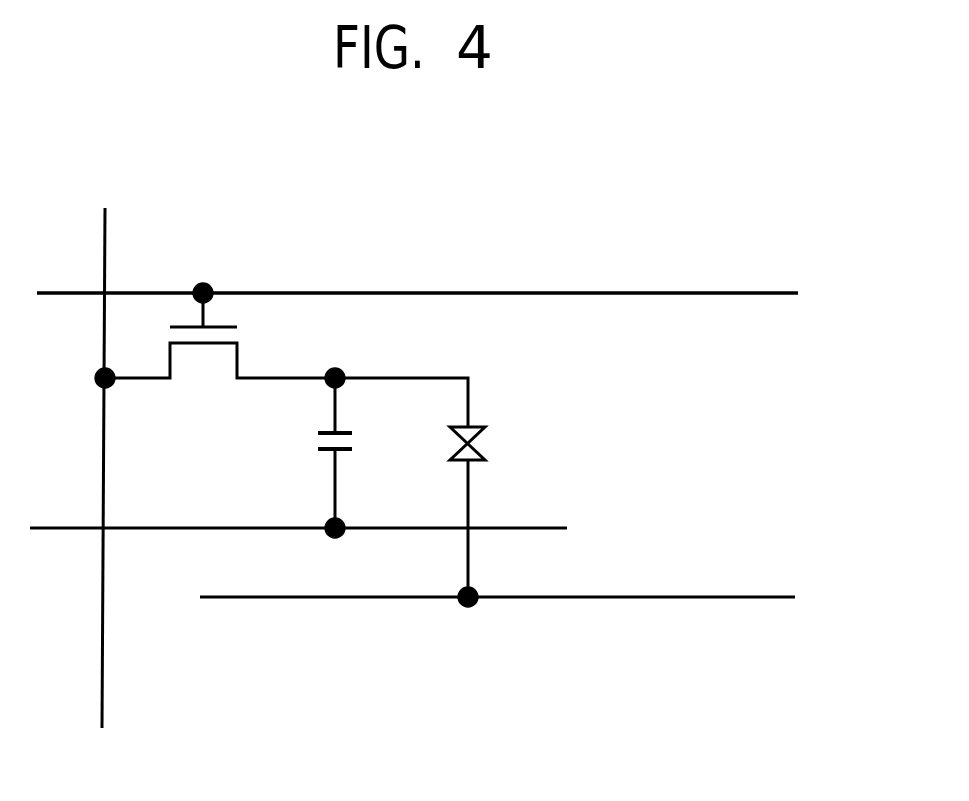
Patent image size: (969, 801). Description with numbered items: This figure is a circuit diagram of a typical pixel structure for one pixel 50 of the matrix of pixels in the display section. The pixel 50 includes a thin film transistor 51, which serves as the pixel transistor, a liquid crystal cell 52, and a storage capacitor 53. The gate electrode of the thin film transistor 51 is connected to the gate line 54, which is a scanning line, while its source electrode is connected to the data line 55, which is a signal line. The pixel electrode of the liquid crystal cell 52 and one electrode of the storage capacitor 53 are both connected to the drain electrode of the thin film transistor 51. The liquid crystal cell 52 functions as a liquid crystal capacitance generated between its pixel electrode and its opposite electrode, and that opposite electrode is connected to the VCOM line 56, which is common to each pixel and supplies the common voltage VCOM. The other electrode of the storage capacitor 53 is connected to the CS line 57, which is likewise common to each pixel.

The pixel 50 is at (794, 251).
The thin film transistor 51 is at (225, 363).
The liquid crystal cell 52 is at (488, 443).
The storage capacitor 53 is at (312, 442).
The gate line 54 is at (333, 293).
The data line 55 is at (102, 700).
The VCOM line 56 is at (535, 597).
The CS line 57 is at (527, 528).